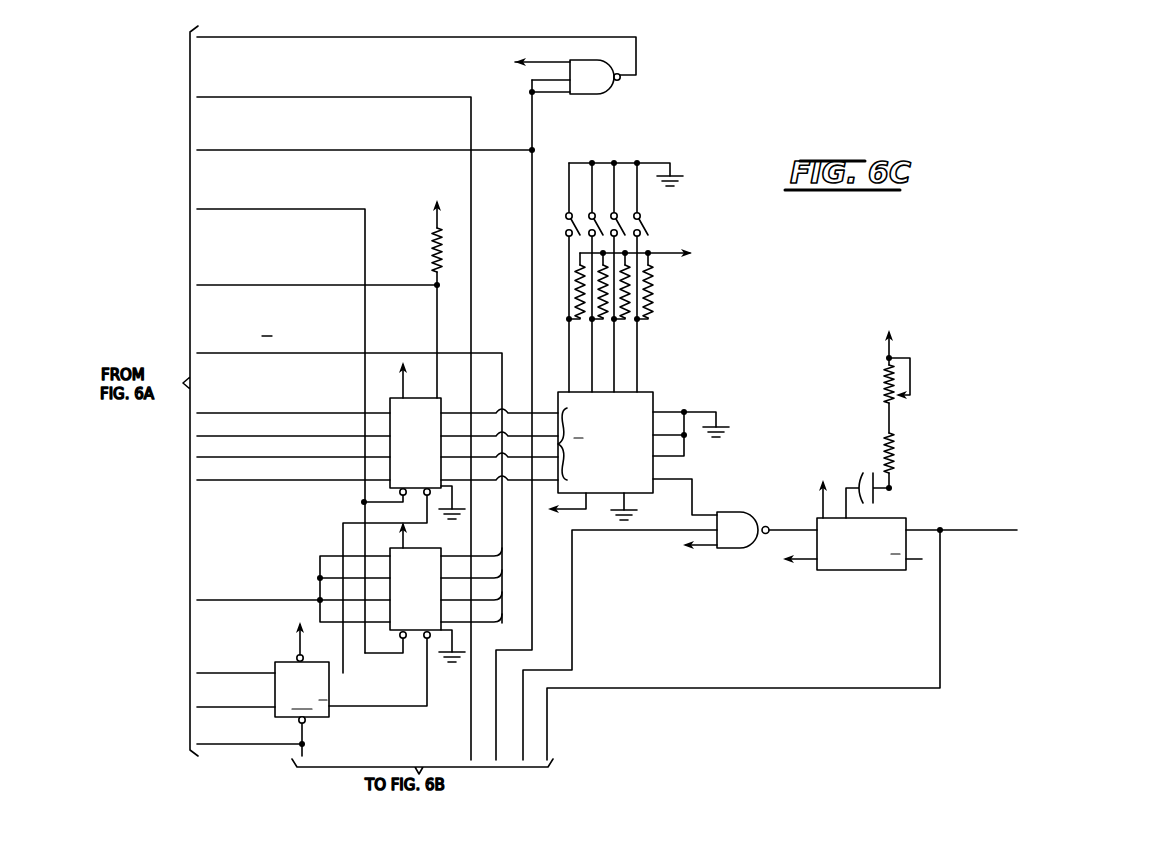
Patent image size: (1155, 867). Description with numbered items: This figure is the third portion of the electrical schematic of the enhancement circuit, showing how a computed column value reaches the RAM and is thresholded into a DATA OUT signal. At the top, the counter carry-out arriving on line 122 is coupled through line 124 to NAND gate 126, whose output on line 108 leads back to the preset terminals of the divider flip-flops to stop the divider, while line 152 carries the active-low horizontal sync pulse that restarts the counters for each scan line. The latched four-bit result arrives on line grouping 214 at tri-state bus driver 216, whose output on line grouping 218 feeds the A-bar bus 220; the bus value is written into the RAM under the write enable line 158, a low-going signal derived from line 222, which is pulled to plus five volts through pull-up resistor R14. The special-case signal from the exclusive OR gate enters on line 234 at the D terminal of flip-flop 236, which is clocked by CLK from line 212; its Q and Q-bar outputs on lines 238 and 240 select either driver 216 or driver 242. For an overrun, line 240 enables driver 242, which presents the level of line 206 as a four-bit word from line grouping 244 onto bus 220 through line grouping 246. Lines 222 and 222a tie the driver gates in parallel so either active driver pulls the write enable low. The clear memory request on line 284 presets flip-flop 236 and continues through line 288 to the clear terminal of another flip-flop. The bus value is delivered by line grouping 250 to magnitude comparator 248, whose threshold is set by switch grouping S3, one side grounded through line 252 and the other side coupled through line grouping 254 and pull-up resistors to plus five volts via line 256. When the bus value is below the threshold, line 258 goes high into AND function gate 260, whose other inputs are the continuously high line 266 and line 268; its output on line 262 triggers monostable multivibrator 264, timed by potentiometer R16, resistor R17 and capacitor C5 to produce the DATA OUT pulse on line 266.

The line 108 is at (388, 37).
The line 122 is at (280, 150).
The line 124 is at (532, 170).
The NAND gate 126 is at (607, 90).
The line 152 is at (262, 97).
The line 158 is at (262, 285).
The line 206 is at (240, 600).
The line 212 is at (222, 707).
The line grouping 214 is at (268, 414).
The bus driver 216 is at (392, 398).
The line grouping 218 is at (456, 402).
The A-bar bus 220 is at (483, 348).
The line 222 is at (437, 318).
The line 222a is at (385, 584).
The line 234 is at (215, 673).
The flip-flop 236 is at (331, 686).
The line 238 is at (344, 660).
The line 240 is at (375, 708).
The bus driver 242 is at (432, 655).
The line grouping 244 is at (338, 551).
The line grouping 246 is at (480, 623).
The magnitude comparator 248 is at (652, 392).
The line grouping 250 is at (548, 392).
The line 252 is at (625, 163).
The line grouping 254 is at (652, 341).
The line 256 is at (680, 256).
The line 258 is at (692, 478).
The AND function gate 260 is at (728, 512).
The line 262 is at (795, 529).
The monostable multivibrator 264 is at (845, 570).
The line 266 is at (922, 529).
The line 268 is at (590, 533).
The line 284 is at (307, 753).
The line 288 is at (230, 745).
The pull-up resistor R14 is at (433, 250).
The potentiometer R16 is at (884, 373).
The resistor R17 is at (885, 438).
The capacitor C5 is at (867, 498).
The switch grouping S3 is at (712, 206).